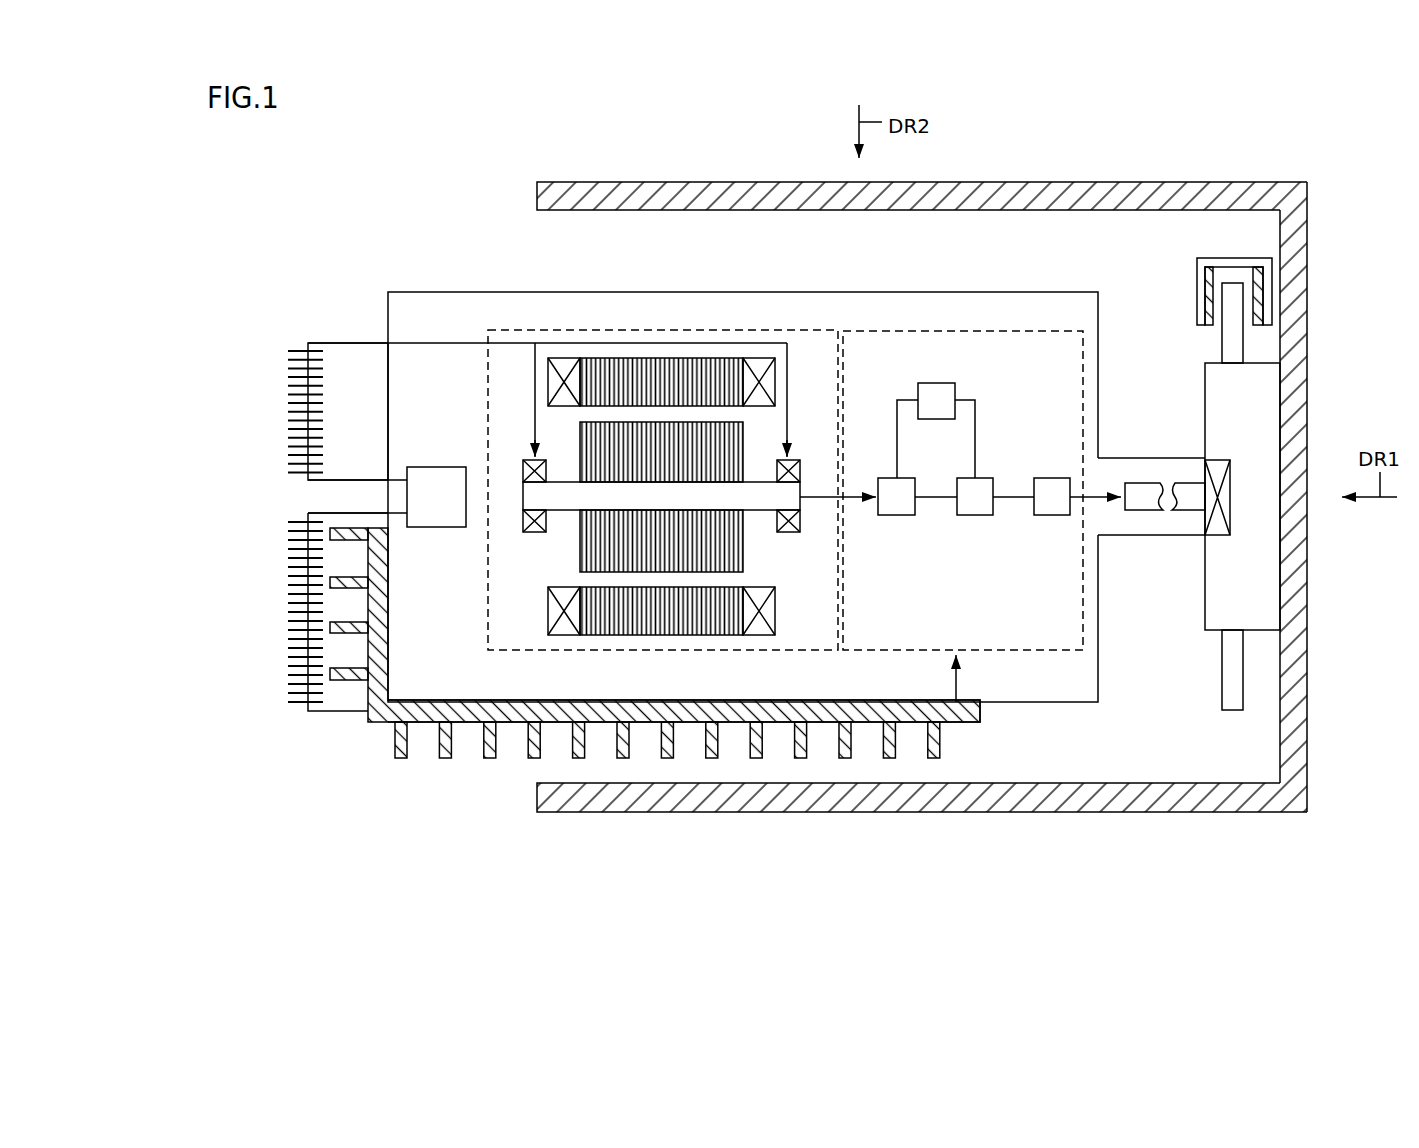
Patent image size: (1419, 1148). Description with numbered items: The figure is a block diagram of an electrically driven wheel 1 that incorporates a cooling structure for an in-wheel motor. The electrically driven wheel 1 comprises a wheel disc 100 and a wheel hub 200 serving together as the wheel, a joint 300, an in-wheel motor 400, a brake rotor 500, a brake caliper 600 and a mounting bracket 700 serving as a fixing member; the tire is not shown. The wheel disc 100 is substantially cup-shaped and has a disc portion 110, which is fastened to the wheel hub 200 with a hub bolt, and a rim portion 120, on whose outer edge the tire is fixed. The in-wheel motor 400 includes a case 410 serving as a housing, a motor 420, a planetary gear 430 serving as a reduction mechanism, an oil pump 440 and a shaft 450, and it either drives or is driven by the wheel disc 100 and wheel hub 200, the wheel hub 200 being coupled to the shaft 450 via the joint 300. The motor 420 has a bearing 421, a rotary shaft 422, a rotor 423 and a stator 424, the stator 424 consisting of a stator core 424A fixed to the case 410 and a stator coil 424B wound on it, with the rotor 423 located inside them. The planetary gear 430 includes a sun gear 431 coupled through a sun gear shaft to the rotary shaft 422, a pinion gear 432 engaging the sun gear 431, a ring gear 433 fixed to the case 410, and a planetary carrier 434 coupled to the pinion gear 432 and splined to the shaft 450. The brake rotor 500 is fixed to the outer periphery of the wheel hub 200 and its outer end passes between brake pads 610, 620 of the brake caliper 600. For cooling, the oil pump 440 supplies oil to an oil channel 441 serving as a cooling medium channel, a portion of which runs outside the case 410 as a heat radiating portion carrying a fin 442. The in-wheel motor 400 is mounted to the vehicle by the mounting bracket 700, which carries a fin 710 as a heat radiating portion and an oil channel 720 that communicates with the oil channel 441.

The electrically driven wheel 1 is at (392, 246).
The wheel disc 100 is at (1314, 162).
The disc portion 110 is at (1297, 416).
The rim portion 120 is at (1115, 190).
The wheel hub 200 is at (1252, 585).
The joint 300 is at (1230, 512).
The in-wheel motor 400 is at (1100, 862).
The case 410 is at (1010, 702).
The motor 420 is at (604, 650).
The bearing 421 is at (521, 466).
The rotary shaft 422 is at (760, 493).
The rotor 423 is at (595, 442).
The stator 424 is at (653, 247).
The stator core 424A is at (620, 365).
The stator coil 424B is at (568, 372).
The planetary gear 430 is at (907, 650).
The sun gear 431 is at (897, 515).
The pinion gear 432 is at (975, 515).
The ring gear 433 is at (937, 383).
The planetary carrier 434 is at (1052, 515).
The oil pump 440 is at (437, 510).
The oil channel 441 is at (352, 343).
The fin 442 is at (290, 436).
The shaft 450 is at (1145, 500).
The brake rotor 500 is at (1233, 670).
The brake caliper 600 is at (1259, 243).
The brake pad 610 is at (1205, 295).
The brake pad 620 is at (1260, 298).
The mounting bracket 700 is at (371, 695).
The fin 710 is at (400, 748).
The oil channel 720 is at (433, 713).